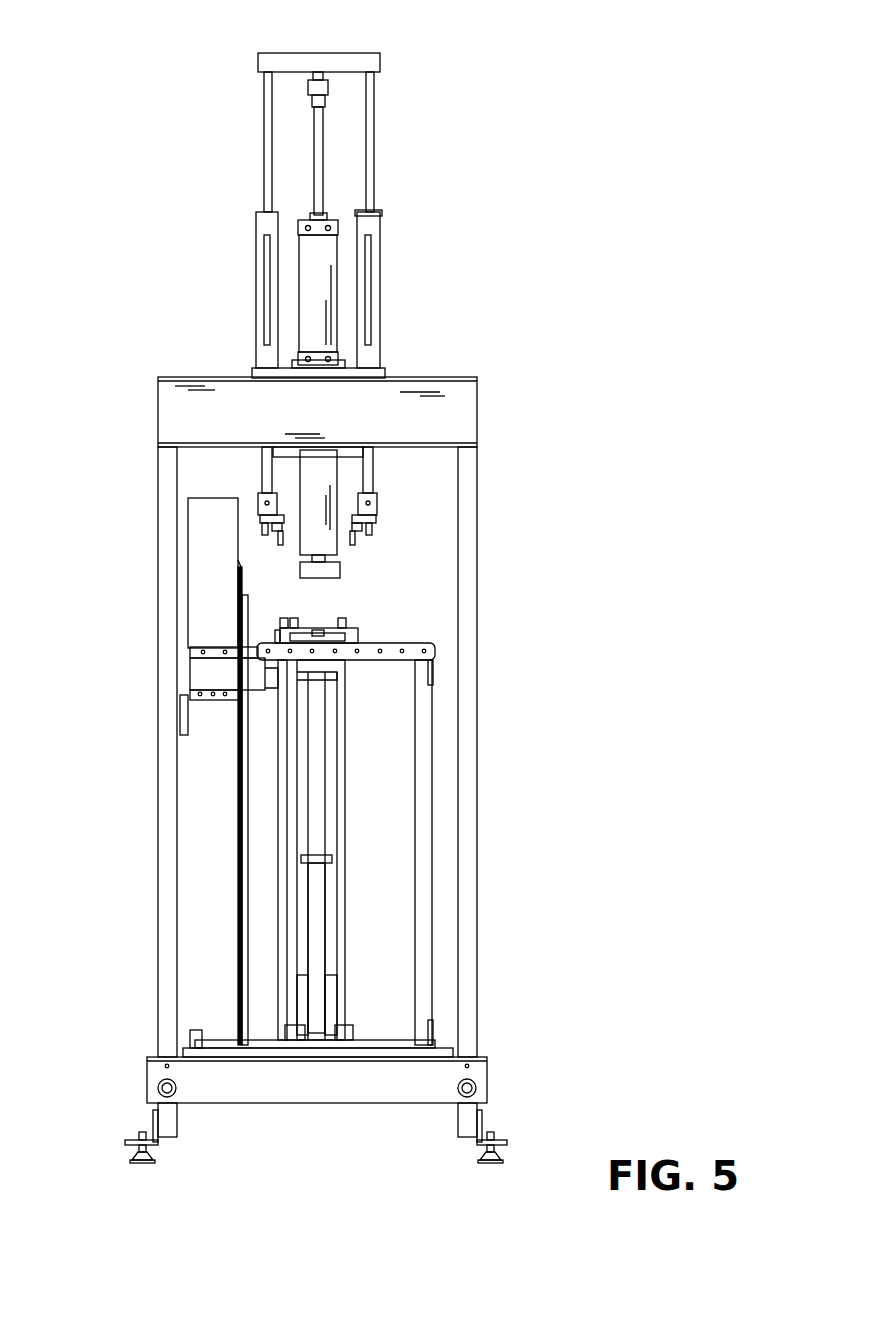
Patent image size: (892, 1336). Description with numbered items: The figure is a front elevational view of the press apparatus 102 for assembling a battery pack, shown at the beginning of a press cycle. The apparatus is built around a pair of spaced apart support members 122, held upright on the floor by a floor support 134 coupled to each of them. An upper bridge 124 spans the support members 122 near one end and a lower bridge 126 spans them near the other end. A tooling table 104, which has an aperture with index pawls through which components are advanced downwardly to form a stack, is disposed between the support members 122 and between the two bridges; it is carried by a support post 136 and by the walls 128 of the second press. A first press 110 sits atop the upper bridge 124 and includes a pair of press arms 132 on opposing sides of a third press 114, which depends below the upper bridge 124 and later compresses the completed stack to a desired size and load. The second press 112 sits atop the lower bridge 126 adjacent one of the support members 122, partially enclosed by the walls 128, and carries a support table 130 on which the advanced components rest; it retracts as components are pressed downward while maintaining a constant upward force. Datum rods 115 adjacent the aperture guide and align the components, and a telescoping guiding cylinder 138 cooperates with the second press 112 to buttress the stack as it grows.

The press apparatus 102 is at (458, 357).
The tooling table 104 is at (405, 645).
The first press 110 is at (340, 258).
The second press 112 is at (218, 889).
The third press 114 is at (333, 478).
The datum rods 115 is at (285, 940).
The support members 122 is at (159, 556).
The upper bridge 124 is at (455, 423).
The lower bridge 126 is at (318, 1082).
The walls 128 is at (217, 498).
The support table 130 is at (265, 700).
The press arms 132 is at (270, 120).
The floor support 134 is at (130, 1140).
The support post 136 is at (432, 790).
The telescoping guiding cylinder 138 is at (325, 918).